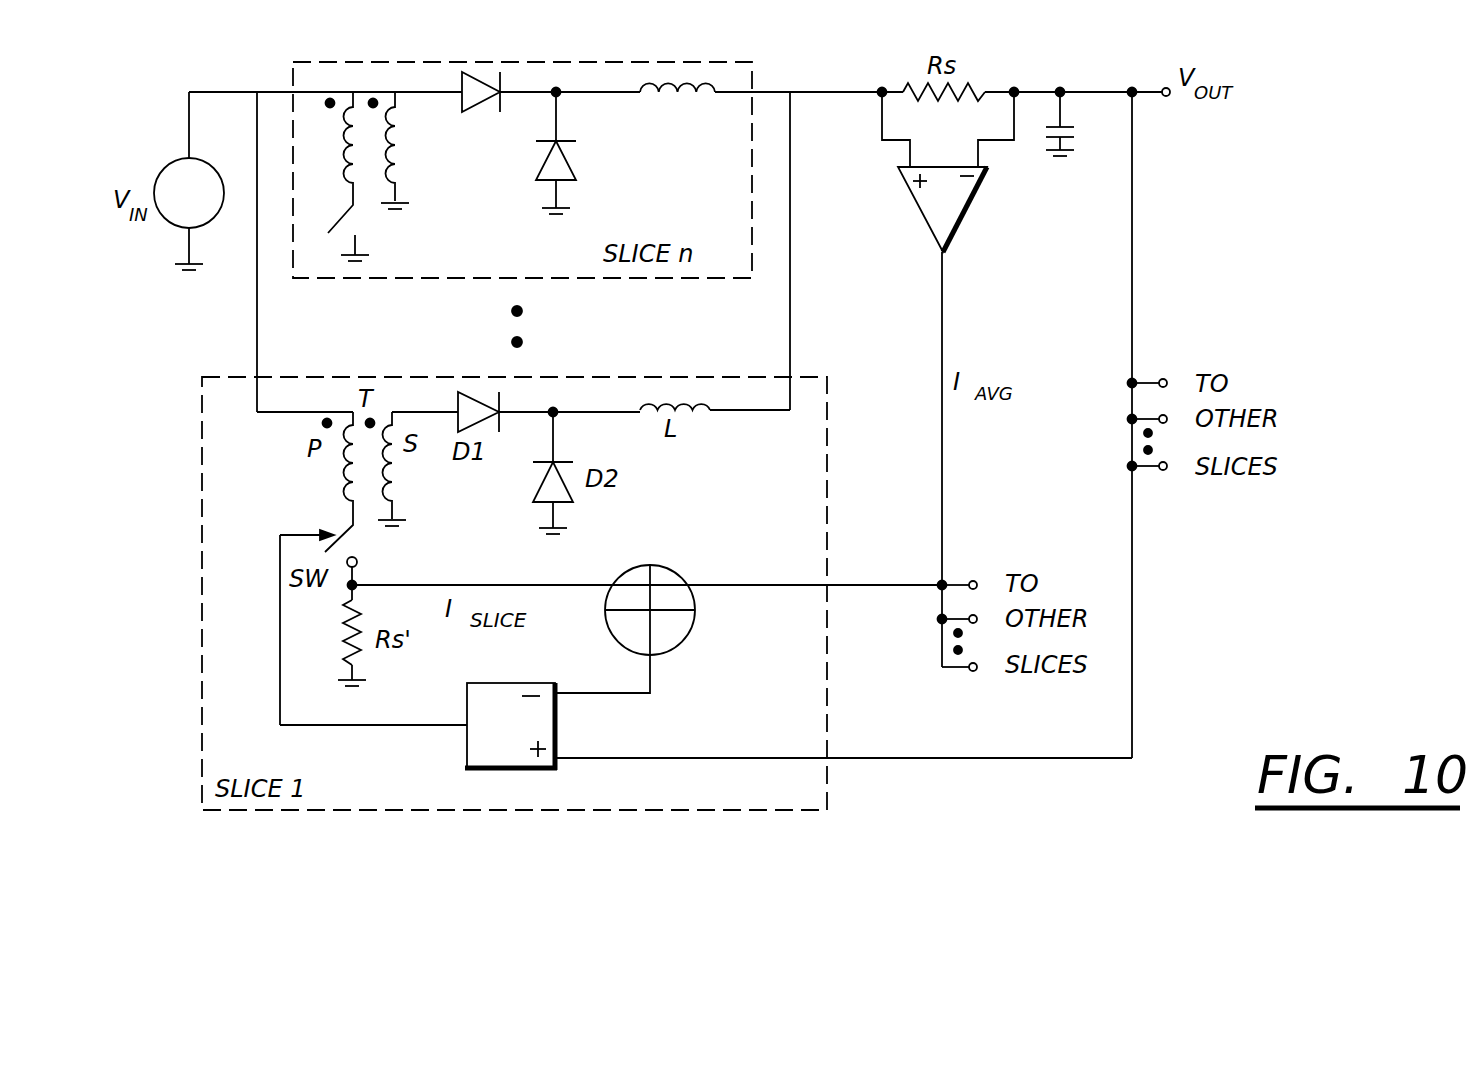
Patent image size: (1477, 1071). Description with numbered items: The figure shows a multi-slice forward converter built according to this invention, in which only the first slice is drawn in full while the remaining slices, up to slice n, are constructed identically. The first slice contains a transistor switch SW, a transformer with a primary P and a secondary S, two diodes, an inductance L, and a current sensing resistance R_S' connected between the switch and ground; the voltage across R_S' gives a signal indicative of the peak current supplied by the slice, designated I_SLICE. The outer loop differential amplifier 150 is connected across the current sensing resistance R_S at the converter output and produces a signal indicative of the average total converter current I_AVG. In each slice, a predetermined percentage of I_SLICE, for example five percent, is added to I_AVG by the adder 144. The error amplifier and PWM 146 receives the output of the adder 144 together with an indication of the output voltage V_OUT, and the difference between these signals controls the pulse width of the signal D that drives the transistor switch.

The adder 144 is at (677, 645).
The error amplifier and PWM 146 is at (555, 768).
The outer loop differential amplifier 150 is at (960, 230).